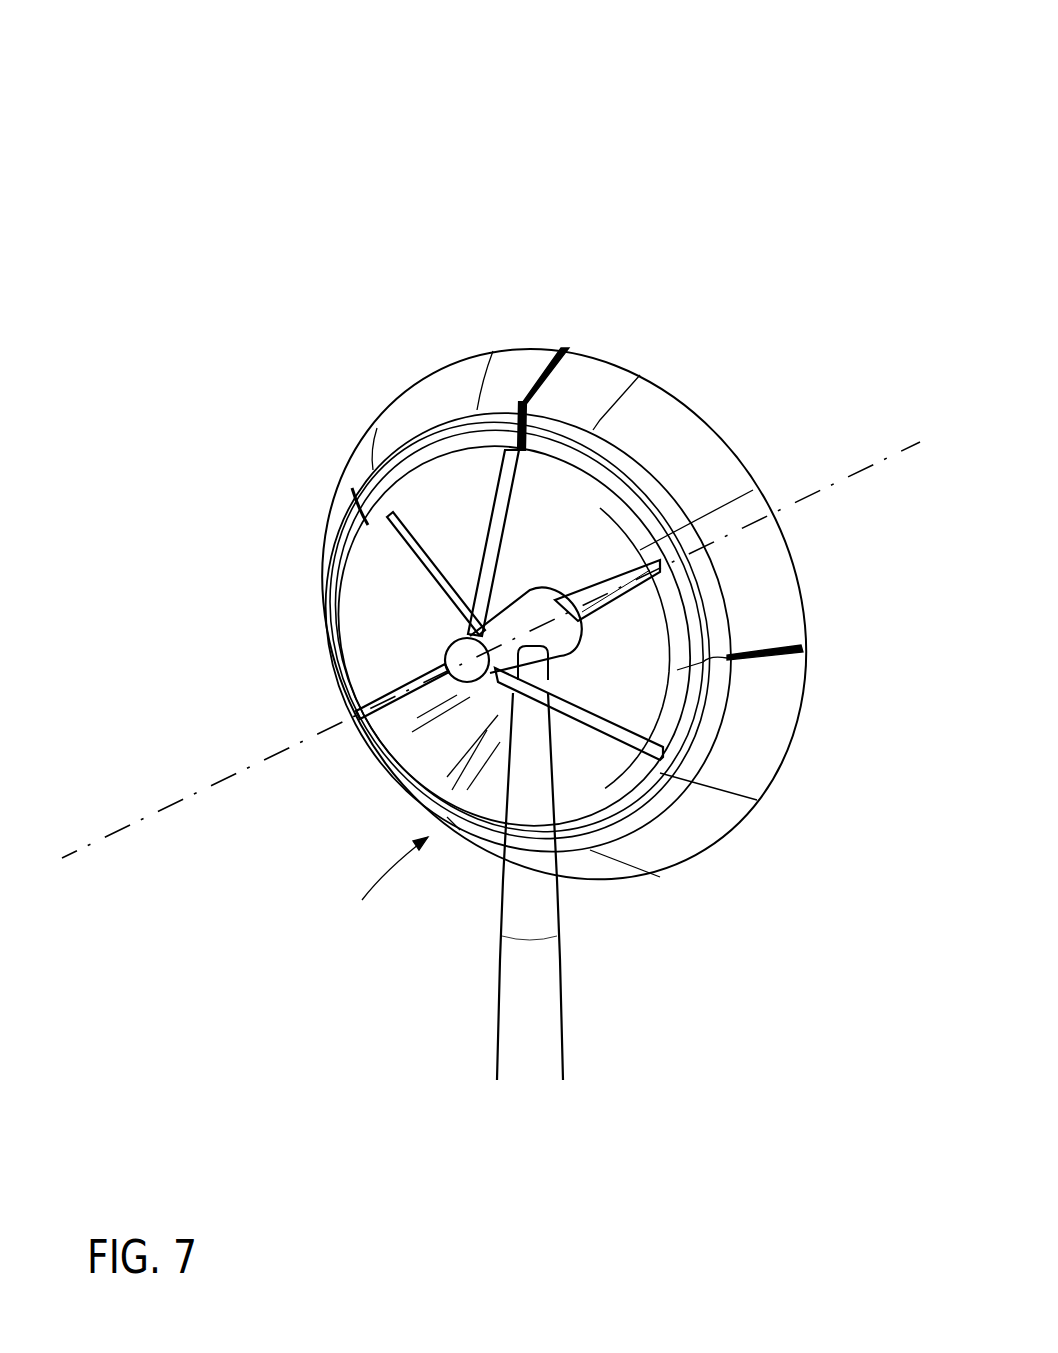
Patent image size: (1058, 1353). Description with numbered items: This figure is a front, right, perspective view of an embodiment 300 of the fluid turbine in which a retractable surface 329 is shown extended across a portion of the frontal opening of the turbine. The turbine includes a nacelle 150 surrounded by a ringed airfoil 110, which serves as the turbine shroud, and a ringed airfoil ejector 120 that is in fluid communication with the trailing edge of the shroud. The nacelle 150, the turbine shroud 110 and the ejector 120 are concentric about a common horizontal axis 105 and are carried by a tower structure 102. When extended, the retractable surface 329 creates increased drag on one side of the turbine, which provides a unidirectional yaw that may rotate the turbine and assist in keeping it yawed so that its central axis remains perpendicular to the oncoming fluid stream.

The embodiment 300 is at (110, 42).
The ringed airfoil ejector 120 is at (690, 435).
The common horizontal axis 105 is at (150, 815).
The nacelle body 150 is at (545, 638).
The retractable surface 329 is at (437, 750).
The ringed airfoil 110 is at (362, 900).
The tower structure 102 is at (540, 890).